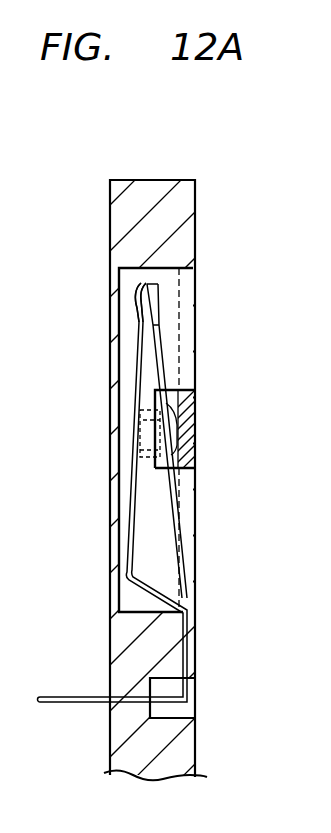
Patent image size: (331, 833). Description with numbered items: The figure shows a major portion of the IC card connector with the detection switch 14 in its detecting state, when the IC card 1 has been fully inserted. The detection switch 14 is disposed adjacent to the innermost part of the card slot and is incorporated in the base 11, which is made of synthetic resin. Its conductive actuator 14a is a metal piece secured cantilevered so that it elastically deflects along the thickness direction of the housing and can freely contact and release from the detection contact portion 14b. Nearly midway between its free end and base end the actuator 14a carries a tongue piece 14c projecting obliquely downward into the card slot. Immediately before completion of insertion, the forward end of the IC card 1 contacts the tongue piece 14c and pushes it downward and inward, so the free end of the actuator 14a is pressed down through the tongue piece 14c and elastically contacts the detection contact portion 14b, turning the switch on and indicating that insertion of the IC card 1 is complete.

The base 11 is at (118, 228).
The IC card 1 is at (192, 423).
The detection switch 14 is at (128, 498).
The actuator 14a is at (155, 298).
The detection contact portion 14b is at (155, 298).
The tongue piece 14c is at (158, 438).